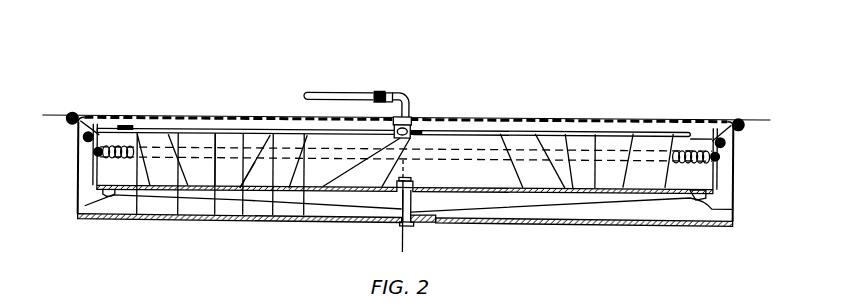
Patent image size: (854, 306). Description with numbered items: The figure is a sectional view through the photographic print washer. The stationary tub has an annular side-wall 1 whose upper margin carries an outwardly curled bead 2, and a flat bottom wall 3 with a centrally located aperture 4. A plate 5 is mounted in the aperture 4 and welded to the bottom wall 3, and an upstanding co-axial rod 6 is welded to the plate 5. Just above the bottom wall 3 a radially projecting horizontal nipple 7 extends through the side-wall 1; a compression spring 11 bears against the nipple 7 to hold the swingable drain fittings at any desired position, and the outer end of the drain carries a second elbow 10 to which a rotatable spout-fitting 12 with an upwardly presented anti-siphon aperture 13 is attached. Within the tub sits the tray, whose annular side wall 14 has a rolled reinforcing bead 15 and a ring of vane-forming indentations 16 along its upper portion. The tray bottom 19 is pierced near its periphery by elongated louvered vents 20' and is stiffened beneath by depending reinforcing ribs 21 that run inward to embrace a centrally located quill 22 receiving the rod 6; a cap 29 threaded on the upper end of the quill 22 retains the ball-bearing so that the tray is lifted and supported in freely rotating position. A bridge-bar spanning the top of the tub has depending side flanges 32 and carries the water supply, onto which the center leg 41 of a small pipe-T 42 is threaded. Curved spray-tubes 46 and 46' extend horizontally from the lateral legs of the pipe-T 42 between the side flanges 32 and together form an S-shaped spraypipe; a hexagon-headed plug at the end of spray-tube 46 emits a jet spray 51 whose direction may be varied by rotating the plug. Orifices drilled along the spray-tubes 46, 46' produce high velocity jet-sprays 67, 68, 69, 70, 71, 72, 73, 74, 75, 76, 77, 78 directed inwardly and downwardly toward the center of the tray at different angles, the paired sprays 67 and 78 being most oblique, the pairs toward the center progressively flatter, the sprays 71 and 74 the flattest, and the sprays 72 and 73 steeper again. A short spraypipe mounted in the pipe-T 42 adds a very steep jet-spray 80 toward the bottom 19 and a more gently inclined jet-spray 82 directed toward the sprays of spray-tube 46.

The annular side-wall 1 is at (77, 181).
The outwardly curled bead 2 is at (70, 127).
The flat bottom wall 3 is at (397, 167).
The centrally located aperture 4 is at (434, 222).
The plate 5 is at (423, 226).
The upstanding co-axial rod 6 is at (627, 191).
The horizontal nipple 7 is at (50, 110).
The second elbow 10 is at (103, 120).
The compression spring 11 is at (137, 107).
The rotatable spout-fitting 12 is at (178, 107).
The upwardly presented aperture 13 is at (215, 107).
The annular side wall 14 is at (243, 107).
The rolled reinforcing and finishing bead 15 is at (273, 107).
The vane-forming indentations 16 is at (124, 157).
The bottom 19 is at (707, 189).
The louvered vents 20' is at (405, 204).
The reinforcing ribs 21 is at (338, 208).
The quill 22 is at (403, 205).
The cap 29 is at (413, 182).
The depending side flanges 32 is at (493, 149).
The center leg 41 is at (412, 126).
The pipe-T 42 is at (420, 131).
The spray-tube 46 is at (245, 117).
The spray-tube 46' is at (562, 118).
The jet spray 51 is at (93, 153).
The jet-spray 67 is at (146, 169).
The jet-spray 68 is at (182, 171).
The jet-spray 69 is at (215, 177).
The jet-spray 70 is at (263, 148).
The jet-spray 71 is at (250, 172).
The jet-spray 72 is at (302, 151).
The jet-spray 73 is at (519, 178).
The jet-spray 74 is at (561, 181).
The jet-spray 75 is at (567, 153).
The jet-spray 76 is at (595, 153).
The jet-spray 77 is at (625, 180).
The jet-spray 78 is at (672, 156).
The jet-spray 80 is at (388, 176).
The jet-spray 82 is at (383, 151).